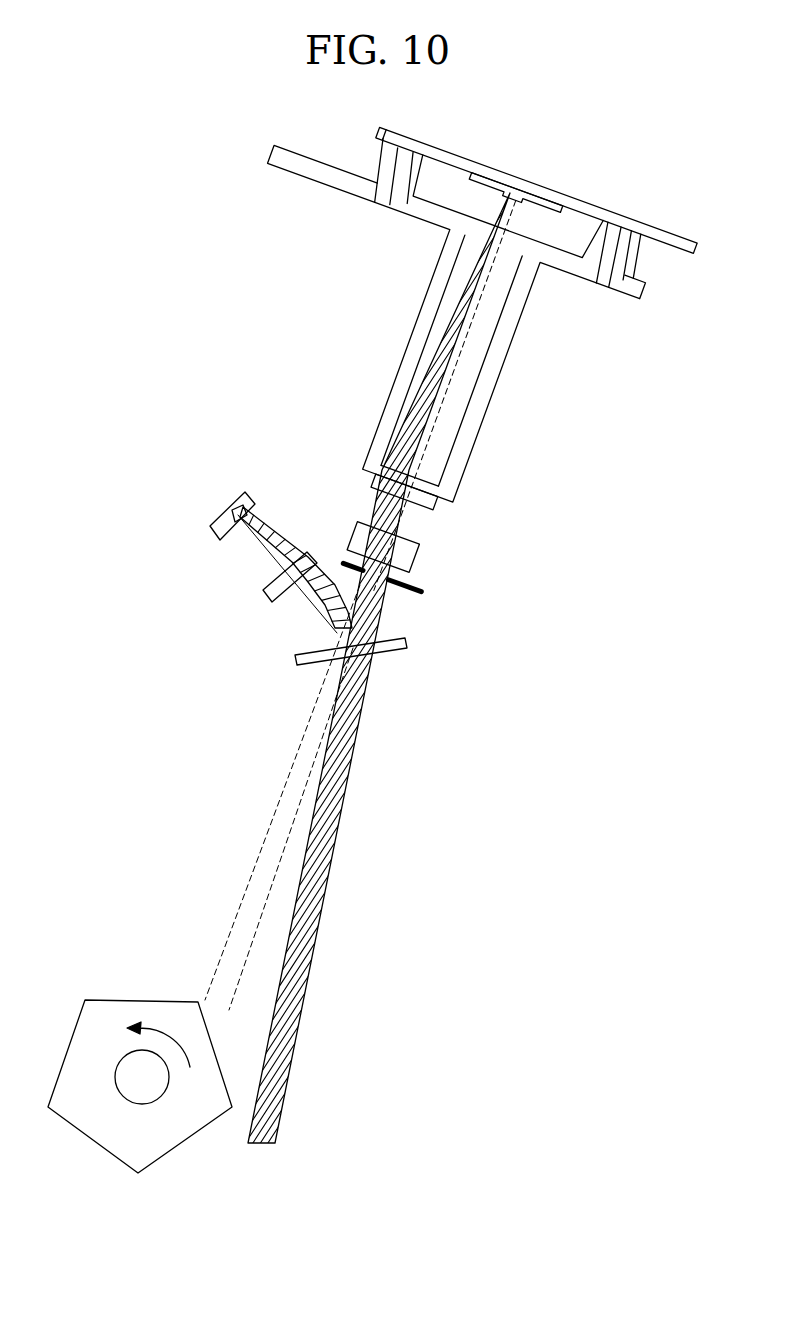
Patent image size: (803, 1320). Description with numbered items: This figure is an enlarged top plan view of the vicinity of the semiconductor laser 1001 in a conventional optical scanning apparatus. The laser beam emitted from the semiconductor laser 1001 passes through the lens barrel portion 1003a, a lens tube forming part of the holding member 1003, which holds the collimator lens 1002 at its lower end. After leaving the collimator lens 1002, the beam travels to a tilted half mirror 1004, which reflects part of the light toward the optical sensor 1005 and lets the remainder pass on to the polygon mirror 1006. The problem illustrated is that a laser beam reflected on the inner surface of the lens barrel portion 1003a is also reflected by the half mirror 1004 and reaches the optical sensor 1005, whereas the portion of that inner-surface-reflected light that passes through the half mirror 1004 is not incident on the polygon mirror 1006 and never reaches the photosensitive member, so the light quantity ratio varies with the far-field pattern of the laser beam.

The semiconductor laser 1001 is at (546, 193).
The collimator lens 1002 is at (430, 501).
The holding member 1003 is at (576, 281).
The lens barrel portion 1003a is at (496, 378).
The half mirror 1004 is at (399, 650).
The optical sensor 1005 is at (226, 508).
The polygon mirror 1006 is at (100, 1137).